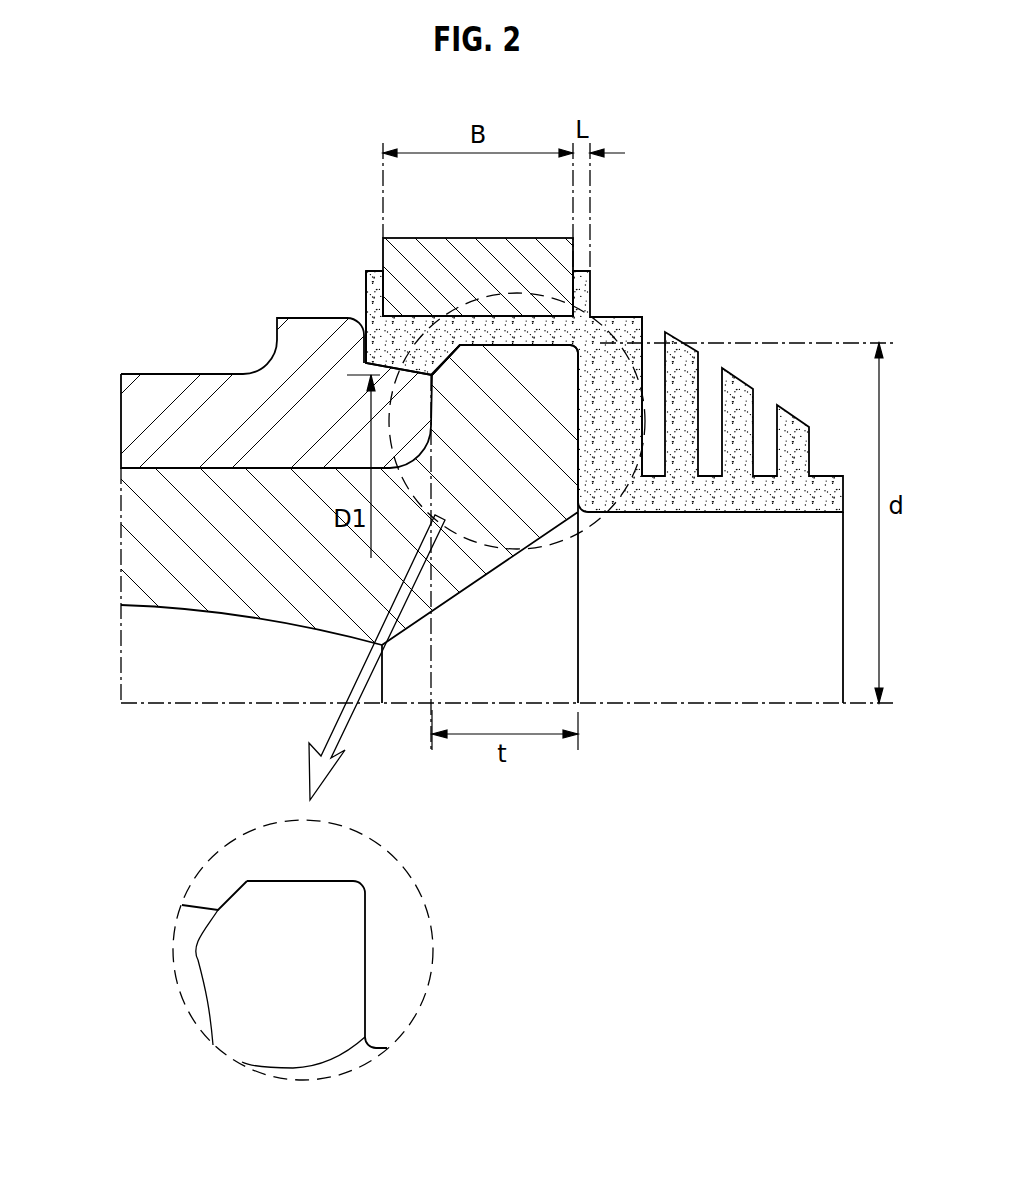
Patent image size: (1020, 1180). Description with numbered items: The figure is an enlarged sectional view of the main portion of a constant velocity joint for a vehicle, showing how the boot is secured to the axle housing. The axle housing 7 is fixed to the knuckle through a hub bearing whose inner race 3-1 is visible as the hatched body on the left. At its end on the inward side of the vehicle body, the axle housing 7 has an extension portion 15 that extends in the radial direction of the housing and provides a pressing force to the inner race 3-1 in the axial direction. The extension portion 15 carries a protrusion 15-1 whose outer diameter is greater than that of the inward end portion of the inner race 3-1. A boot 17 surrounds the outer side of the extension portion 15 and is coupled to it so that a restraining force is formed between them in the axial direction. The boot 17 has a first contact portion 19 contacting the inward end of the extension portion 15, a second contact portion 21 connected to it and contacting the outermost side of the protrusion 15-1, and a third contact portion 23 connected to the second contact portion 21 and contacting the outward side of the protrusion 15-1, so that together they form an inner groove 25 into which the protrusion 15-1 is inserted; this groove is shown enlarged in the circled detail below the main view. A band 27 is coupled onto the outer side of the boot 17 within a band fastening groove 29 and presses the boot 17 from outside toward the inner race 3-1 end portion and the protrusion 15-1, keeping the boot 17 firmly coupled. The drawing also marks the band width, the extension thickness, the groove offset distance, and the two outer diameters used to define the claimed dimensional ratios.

The inner race 3-1 is at (195, 393).
The axle housing 7 is at (189, 561).
The extension portion 15 is at (516, 444).
The protrusion 15-1 is at (489, 358).
The boot 17 is at (627, 328).
The first contact portion 19 is at (578, 443).
The second contact portion 21 is at (580, 370).
The third contact portion 23 is at (480, 362).
The inner groove 25 is at (242, 1062).
The band 27 is at (406, 260).
The band fastening groove 29 is at (376, 274).